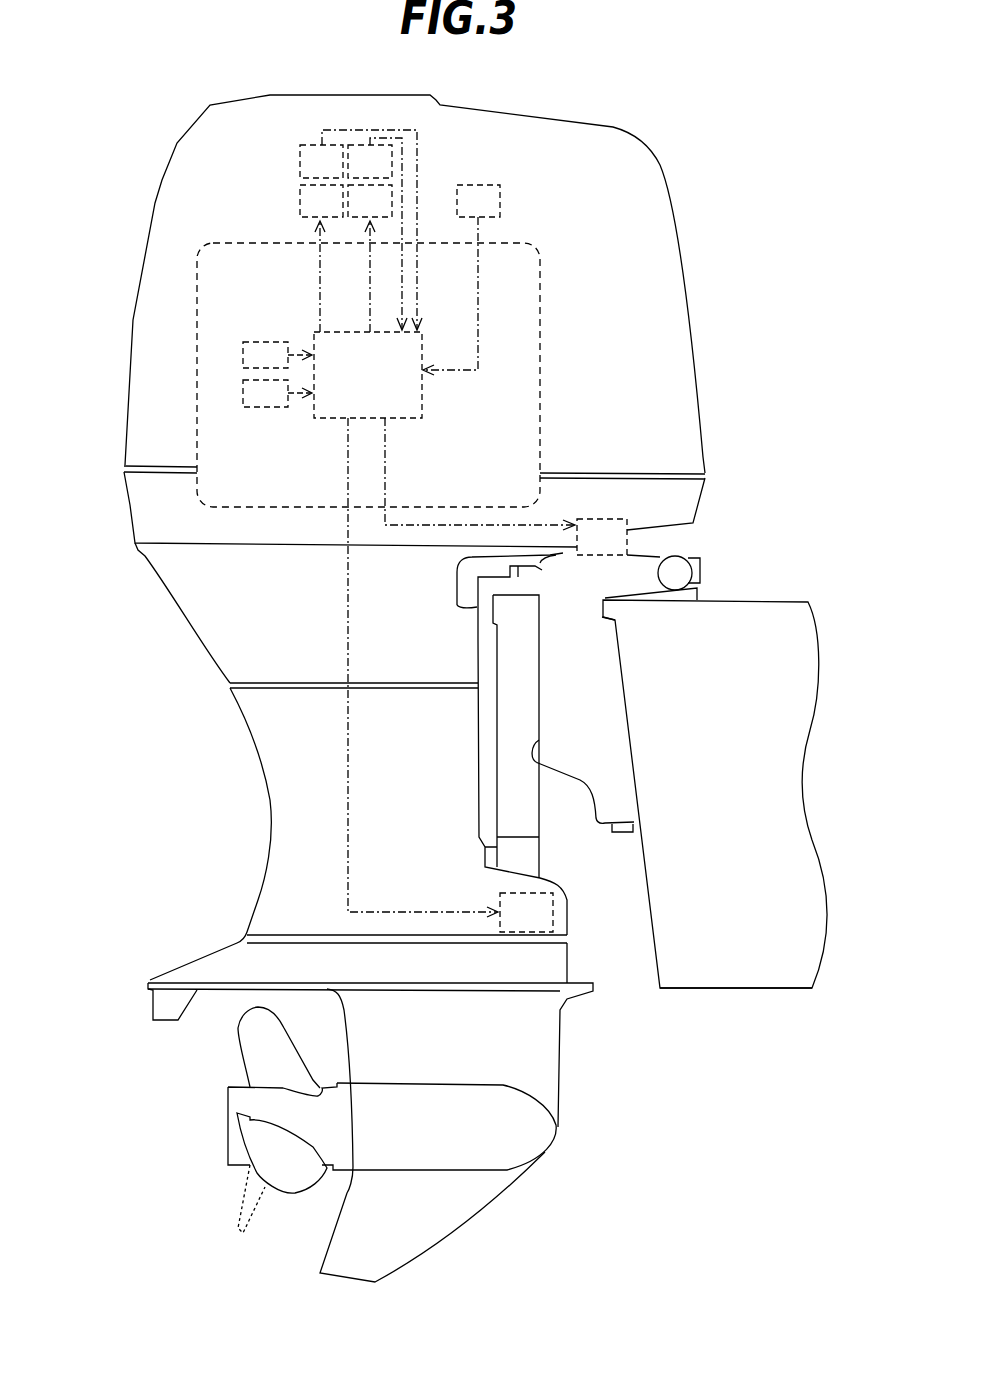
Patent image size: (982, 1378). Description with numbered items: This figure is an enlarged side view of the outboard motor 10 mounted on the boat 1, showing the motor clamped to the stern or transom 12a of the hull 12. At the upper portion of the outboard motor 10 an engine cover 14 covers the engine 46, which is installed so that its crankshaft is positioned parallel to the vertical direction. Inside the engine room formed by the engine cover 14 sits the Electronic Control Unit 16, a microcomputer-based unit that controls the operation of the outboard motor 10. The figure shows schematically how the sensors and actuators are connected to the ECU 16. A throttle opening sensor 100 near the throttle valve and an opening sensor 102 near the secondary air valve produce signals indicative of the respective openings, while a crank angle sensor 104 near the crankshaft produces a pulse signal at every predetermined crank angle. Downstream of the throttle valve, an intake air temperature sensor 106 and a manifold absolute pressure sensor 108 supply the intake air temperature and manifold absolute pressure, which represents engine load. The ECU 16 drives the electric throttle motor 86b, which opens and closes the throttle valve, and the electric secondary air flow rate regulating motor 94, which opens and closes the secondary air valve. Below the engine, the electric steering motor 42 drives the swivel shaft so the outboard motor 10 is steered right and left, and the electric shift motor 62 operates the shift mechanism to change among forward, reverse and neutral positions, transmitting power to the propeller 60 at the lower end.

The boat 1 is at (772, 303).
The outboard motor 10 is at (648, 147).
The hull 12 is at (702, 994).
The transom 12a is at (670, 982).
The engine cover 14 is at (152, 200).
The Electronic Control Unit 16 is at (313, 408).
The electric steering motor 42 is at (506, 486).
The engine 46 is at (197, 285).
The propeller 60 is at (248, 1197).
The electric shift motor 62 is at (450, 675).
The electric throttle motor 86b is at (321, 258).
The electric secondary air flow rate regulating motor 94 is at (370, 258).
The throttle opening sensor 100 is at (300, 160).
The opening sensor 102 is at (400, 160).
The crank angle sensor 104 is at (501, 200).
The intake air temperature sensor 106 is at (243, 355).
The manifold absolute pressure sensor 108 is at (243, 393).